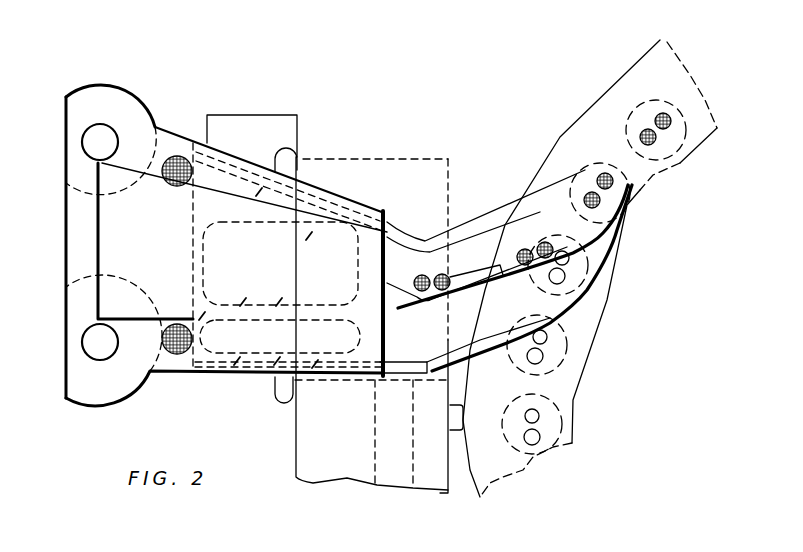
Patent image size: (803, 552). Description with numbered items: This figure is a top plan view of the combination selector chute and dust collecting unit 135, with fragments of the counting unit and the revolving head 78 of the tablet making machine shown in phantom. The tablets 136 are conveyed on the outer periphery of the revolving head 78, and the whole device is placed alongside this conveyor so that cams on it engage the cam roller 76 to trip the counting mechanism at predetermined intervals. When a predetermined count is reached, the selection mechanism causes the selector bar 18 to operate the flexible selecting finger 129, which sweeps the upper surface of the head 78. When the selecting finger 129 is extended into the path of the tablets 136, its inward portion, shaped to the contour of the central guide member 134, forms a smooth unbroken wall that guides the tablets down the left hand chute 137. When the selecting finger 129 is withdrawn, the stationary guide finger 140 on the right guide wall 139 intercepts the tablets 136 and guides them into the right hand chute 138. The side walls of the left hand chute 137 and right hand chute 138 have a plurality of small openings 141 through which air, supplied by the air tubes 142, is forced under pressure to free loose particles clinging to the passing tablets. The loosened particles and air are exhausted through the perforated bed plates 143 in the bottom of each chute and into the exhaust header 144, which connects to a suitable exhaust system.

The selector bar 18 is at (466, 276).
The cam roller 76 is at (457, 431).
The revolving head 78 is at (558, 382).
The selecting finger 129 is at (603, 233).
The central guide member 134 is at (120, 253).
The combination selector chute and dust collecting unit 135 is at (178, 122).
The tablets 136 is at (437, 275).
The left hand chute 137 is at (128, 147).
The right hand chute 138 is at (135, 348).
The right guide wall 139 is at (415, 365).
The stationary guide finger 140 is at (587, 290).
The small openings 141 is at (311, 236).
The air tubes 142 is at (290, 157).
The perforated bed plates 143 is at (165, 185).
The exhaust header 144 is at (246, 128).